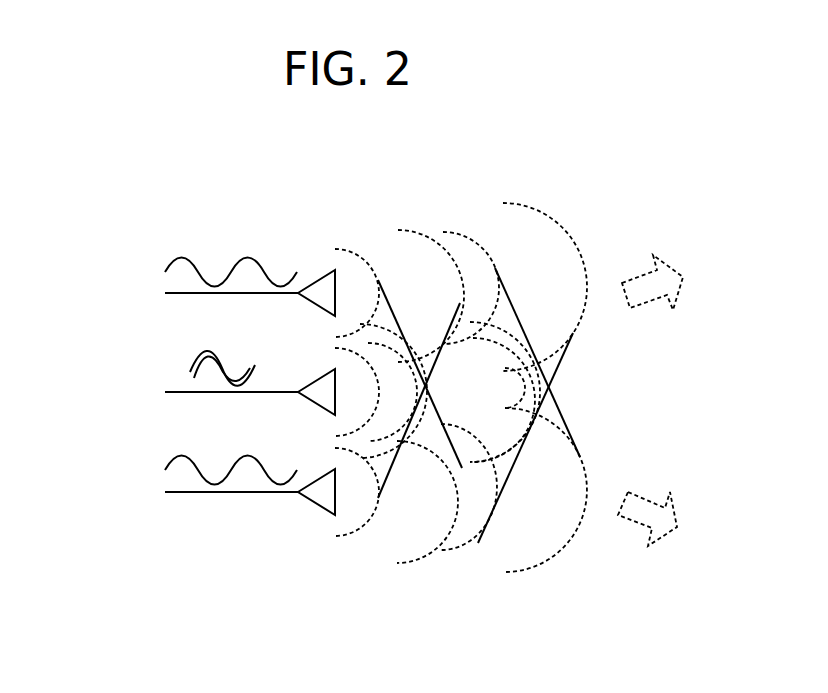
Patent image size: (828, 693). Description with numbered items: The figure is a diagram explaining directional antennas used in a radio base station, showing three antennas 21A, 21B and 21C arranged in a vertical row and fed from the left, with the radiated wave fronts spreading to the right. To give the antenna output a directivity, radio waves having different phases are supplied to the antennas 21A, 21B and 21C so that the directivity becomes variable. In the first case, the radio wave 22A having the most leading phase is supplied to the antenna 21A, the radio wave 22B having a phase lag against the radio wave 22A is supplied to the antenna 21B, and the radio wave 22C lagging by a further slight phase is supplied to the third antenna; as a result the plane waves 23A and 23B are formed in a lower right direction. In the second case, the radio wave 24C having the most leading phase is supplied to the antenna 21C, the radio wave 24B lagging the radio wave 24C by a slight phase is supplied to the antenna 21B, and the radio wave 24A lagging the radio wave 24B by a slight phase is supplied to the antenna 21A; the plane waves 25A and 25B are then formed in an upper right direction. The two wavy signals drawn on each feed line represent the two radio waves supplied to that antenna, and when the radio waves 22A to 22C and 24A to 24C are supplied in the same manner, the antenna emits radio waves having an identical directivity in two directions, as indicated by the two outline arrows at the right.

The antenna 21A is at (323, 270).
The antenna 21B is at (325, 370).
The antenna 21C is at (325, 467).
The radio wave 22A is at (232, 260).
The radio wave 22B is at (190, 372).
The radio wave 22C is at (170, 458).
The radio wave 24A is at (202, 235).
The radio wave 24B is at (157, 348).
The radio wave 24C is at (178, 494).
The plane wave 23A is at (443, 230).
The plane wave 23B is at (568, 230).
The plane wave 25A is at (428, 560).
The plane wave 25B is at (558, 557).